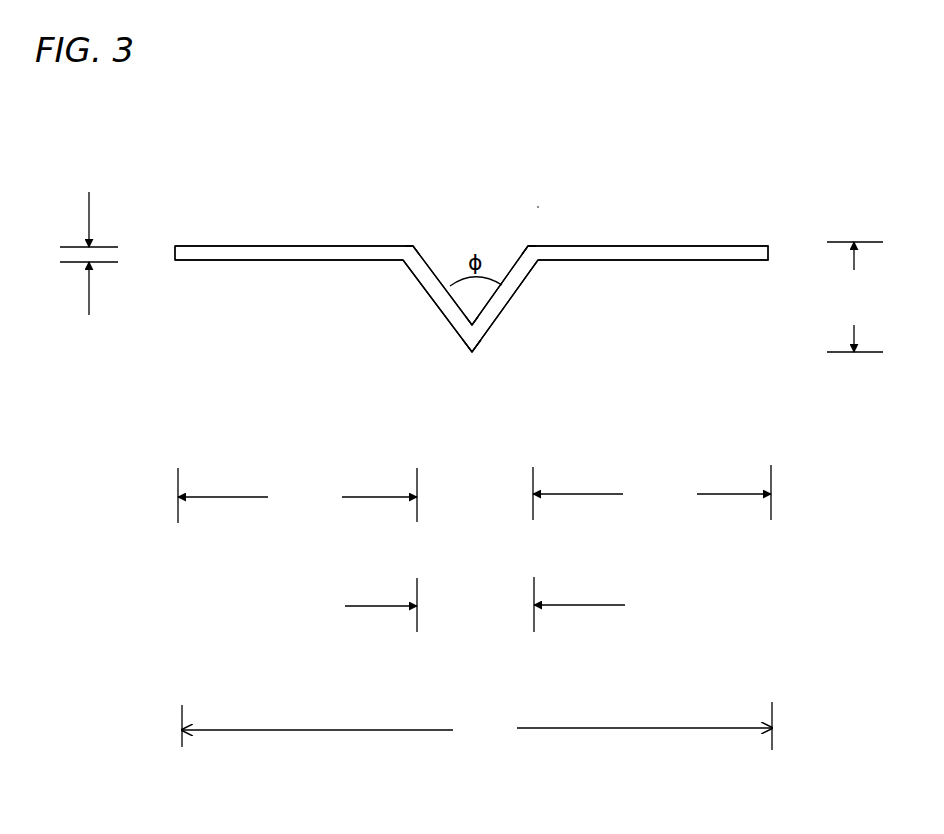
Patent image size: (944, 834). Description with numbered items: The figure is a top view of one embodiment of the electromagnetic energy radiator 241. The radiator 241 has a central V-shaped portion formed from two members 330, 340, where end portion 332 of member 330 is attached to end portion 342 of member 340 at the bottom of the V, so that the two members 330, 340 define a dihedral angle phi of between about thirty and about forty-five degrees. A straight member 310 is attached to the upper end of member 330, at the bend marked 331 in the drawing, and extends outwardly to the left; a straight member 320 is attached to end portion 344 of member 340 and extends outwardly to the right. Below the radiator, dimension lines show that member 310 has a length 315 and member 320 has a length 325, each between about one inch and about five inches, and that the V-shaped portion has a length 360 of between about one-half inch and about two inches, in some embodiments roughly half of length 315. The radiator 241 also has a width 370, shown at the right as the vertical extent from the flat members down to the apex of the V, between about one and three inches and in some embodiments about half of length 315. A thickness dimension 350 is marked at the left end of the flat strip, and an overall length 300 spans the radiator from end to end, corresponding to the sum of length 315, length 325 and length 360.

The electromagnetic energy radiator 241 is at (603, 314).
The member 310 is at (282, 250).
The member 320 is at (658, 250).
The member 330 is at (438, 295).
The member 340 is at (505, 295).
The first bend 331 is at (413, 246).
The end portion 344 is at (528, 246).
The end portion 332 is at (474, 340).
The end portion 342 is at (480, 340).
The plate thickness 350 is at (100, 258).
The width 370 is at (854, 297).
The length 315 is at (297, 495).
The length 325 is at (652, 492).
The length 360 is at (485, 604).
The overall length 300 is at (477, 726).